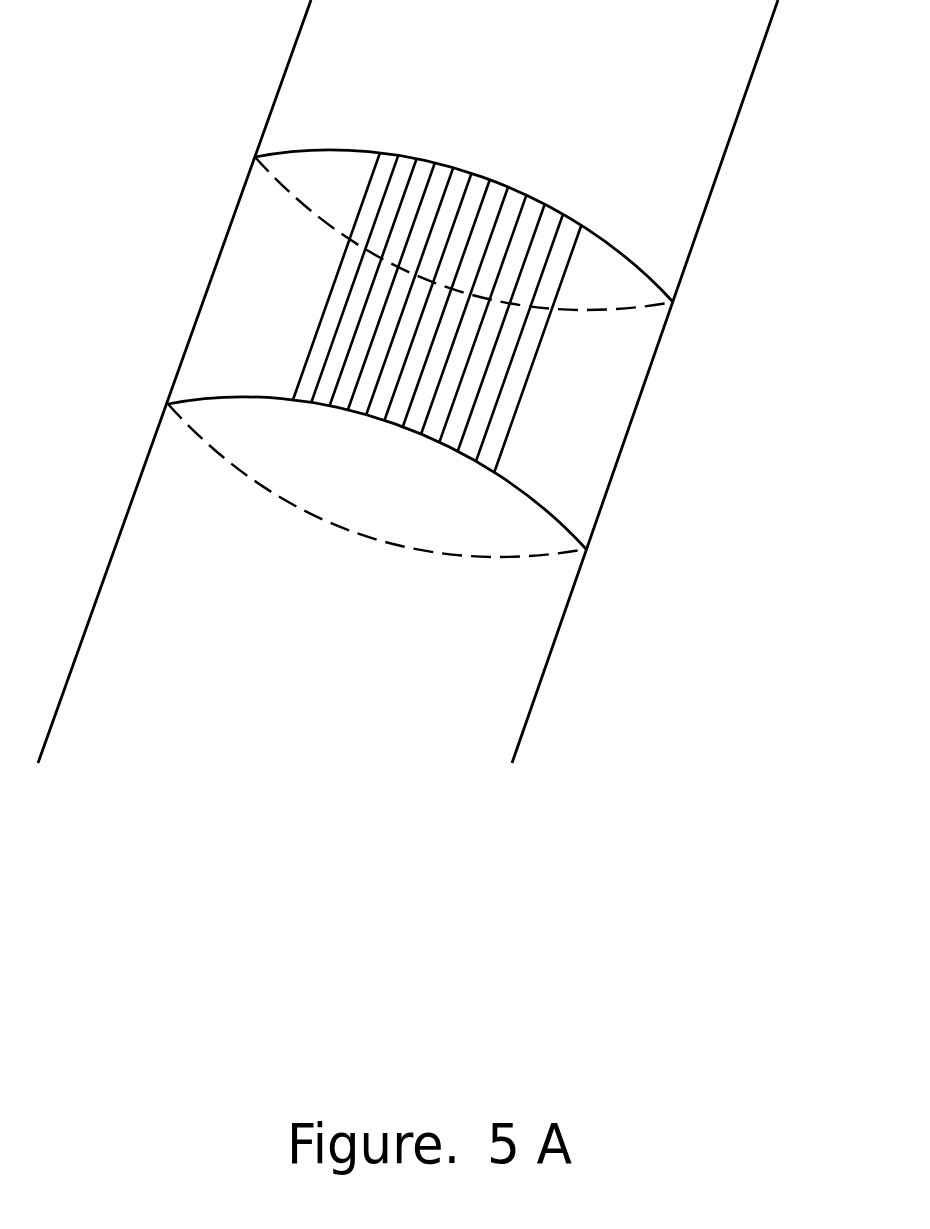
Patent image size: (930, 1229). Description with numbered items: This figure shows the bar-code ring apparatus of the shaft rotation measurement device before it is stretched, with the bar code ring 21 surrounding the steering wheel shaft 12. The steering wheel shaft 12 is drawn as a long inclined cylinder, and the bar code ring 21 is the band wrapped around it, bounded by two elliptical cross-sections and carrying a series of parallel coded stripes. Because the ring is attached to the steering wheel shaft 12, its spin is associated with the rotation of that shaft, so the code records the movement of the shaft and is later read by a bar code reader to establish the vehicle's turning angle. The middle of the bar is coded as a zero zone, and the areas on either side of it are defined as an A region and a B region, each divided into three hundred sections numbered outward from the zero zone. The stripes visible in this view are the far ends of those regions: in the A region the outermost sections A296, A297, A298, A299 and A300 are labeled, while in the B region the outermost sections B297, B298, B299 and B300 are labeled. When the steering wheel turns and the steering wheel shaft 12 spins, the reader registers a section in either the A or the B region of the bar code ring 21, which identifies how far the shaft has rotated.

The steering wheel shaft 12 is at (707, 145).
The bar code ring 21 is at (625, 383).
The bar code section B299 is at (300, 397).
The bar code section B298 is at (405, 162).
The bar code section B297 is at (337, 405).
The bar code section B300 is at (478, 183).
The bar code section A300 is at (410, 427).
The bar code section A299 is at (513, 193).
The bar code section A298 is at (450, 438).
The bar code section A297 is at (550, 207).
The bar code section A296 is at (487, 457).